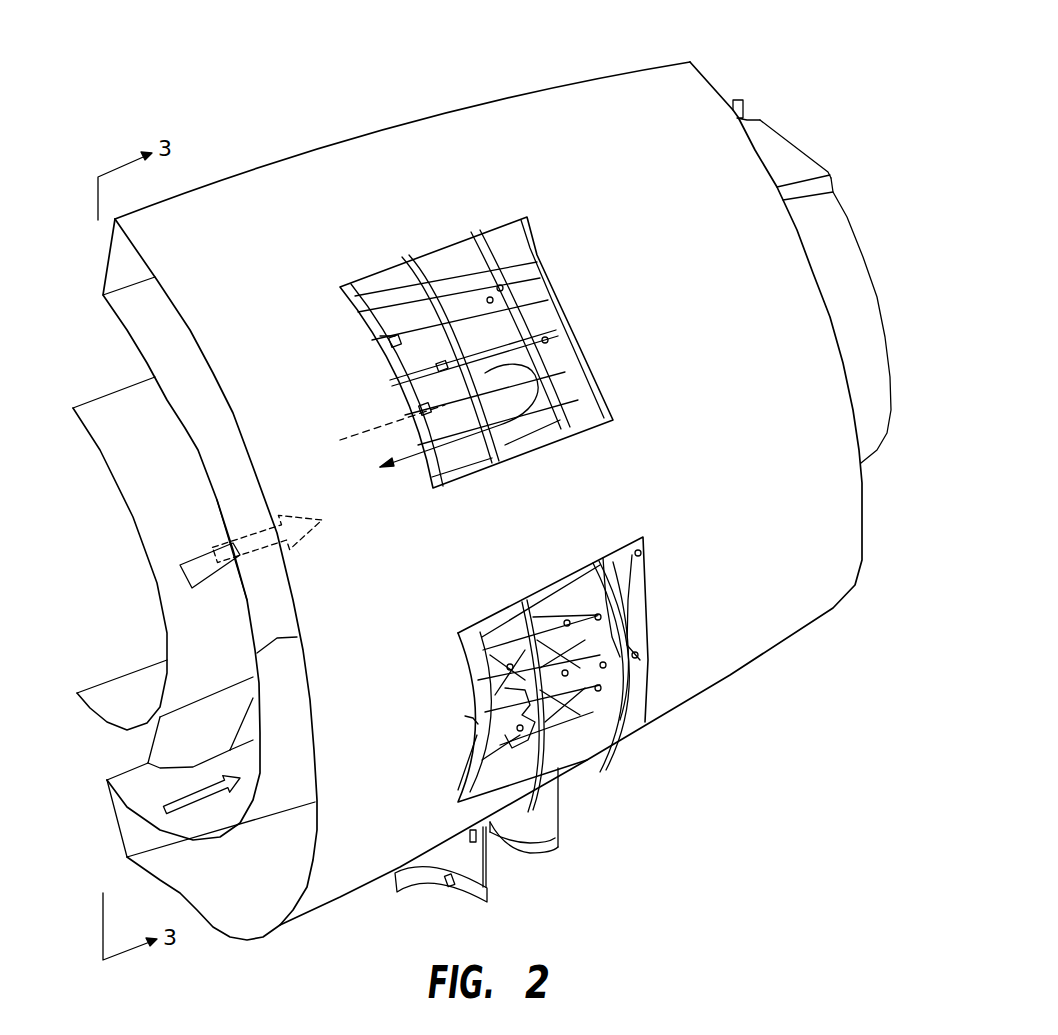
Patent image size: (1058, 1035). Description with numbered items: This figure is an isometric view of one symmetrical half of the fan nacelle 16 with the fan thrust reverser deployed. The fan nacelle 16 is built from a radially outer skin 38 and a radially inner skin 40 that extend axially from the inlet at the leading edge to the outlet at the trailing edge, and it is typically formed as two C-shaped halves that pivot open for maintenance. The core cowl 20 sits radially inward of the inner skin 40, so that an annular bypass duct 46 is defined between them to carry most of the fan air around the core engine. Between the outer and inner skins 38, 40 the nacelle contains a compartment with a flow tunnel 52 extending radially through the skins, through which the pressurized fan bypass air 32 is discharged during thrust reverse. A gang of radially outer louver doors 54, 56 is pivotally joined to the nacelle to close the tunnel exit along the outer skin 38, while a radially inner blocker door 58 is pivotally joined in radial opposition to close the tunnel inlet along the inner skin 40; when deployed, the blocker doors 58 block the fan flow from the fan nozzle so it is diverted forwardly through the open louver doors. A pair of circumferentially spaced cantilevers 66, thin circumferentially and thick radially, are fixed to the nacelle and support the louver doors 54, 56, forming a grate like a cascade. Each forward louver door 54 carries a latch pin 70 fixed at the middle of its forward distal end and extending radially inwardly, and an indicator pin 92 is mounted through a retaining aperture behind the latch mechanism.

The fan nacelle 16 is at (466, 96).
The core cowl 20 is at (151, 447).
The pressurized fan bypass air 32 is at (200, 553).
The outer skin 38 is at (257, 653).
The inner skin 40 is at (240, 598).
The bypass duct 46 is at (118, 364).
The flow tunnel 52 is at (425, 353).
The forward louver door 54 is at (563, 768).
The louver door 56 is at (623, 723).
The blocker door 58 is at (535, 432).
The cantilever 66 is at (492, 627).
The latch pin 70 is at (525, 795).
The indicator pin 92 is at (473, 718).